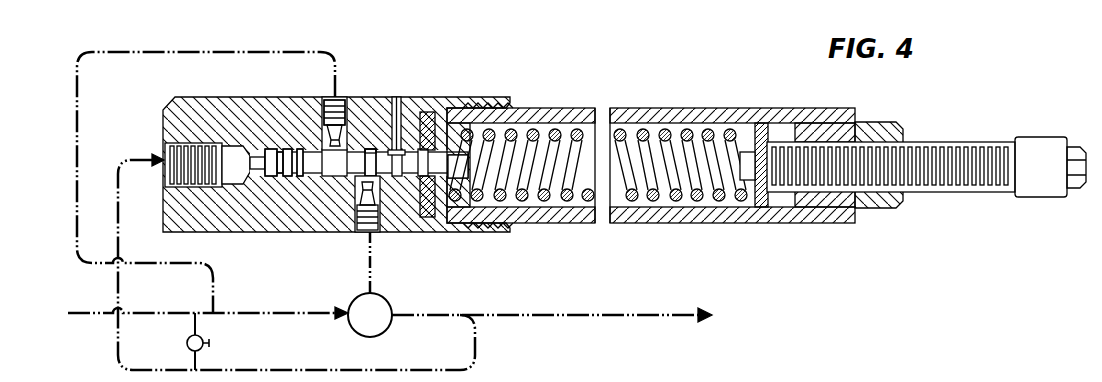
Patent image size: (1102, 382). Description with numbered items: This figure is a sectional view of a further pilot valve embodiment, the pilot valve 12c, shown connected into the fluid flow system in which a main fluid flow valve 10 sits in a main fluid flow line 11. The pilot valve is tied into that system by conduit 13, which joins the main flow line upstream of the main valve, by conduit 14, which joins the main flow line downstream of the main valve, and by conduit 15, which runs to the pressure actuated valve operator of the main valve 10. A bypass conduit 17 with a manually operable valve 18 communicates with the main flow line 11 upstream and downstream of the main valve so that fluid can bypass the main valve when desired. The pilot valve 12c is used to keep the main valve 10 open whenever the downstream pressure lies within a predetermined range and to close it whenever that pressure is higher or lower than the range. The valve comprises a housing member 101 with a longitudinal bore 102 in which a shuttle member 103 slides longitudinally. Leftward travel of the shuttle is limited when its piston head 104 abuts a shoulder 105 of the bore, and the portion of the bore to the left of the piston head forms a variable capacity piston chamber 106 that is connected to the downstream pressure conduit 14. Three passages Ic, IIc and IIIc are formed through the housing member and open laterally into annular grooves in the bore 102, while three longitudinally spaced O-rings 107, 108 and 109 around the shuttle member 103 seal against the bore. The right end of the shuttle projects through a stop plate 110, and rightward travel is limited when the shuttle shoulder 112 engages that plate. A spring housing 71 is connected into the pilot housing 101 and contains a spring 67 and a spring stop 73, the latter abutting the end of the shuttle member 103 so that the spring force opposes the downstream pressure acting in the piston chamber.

The main fluid flow valve 10 is at (384, 327).
The main fluid flow line 11 is at (163, 311).
The pilot valve 12c is at (566, 96).
The conduit 13 is at (172, 52).
The conduit 14 is at (132, 160).
The conduit 15 is at (372, 290).
The bypass conduit 17 is at (197, 329).
The manually operable valve 18 is at (187, 343).
The spring 67 is at (567, 200).
The spring housing 71 is at (658, 217).
The spring stop 73 is at (452, 207).
The housing member 101 is at (255, 97).
The longitudinal bore 102 is at (320, 148).
The shuttle member 103 is at (320, 178).
The piston head 104 is at (279, 178).
The shoulder 105 is at (266, 178).
The variable capacity piston chamber 106 is at (238, 178).
The O-ring 107 is at (287, 178).
The O-ring 108 is at (299, 178).
The O-ring 109 is at (368, 178).
The stop plate 110 is at (428, 217).
The shuttle shoulder 112 is at (374, 150).
The passage Ic is at (348, 97).
The passage IIc is at (380, 232).
The passage IIIc is at (400, 97).